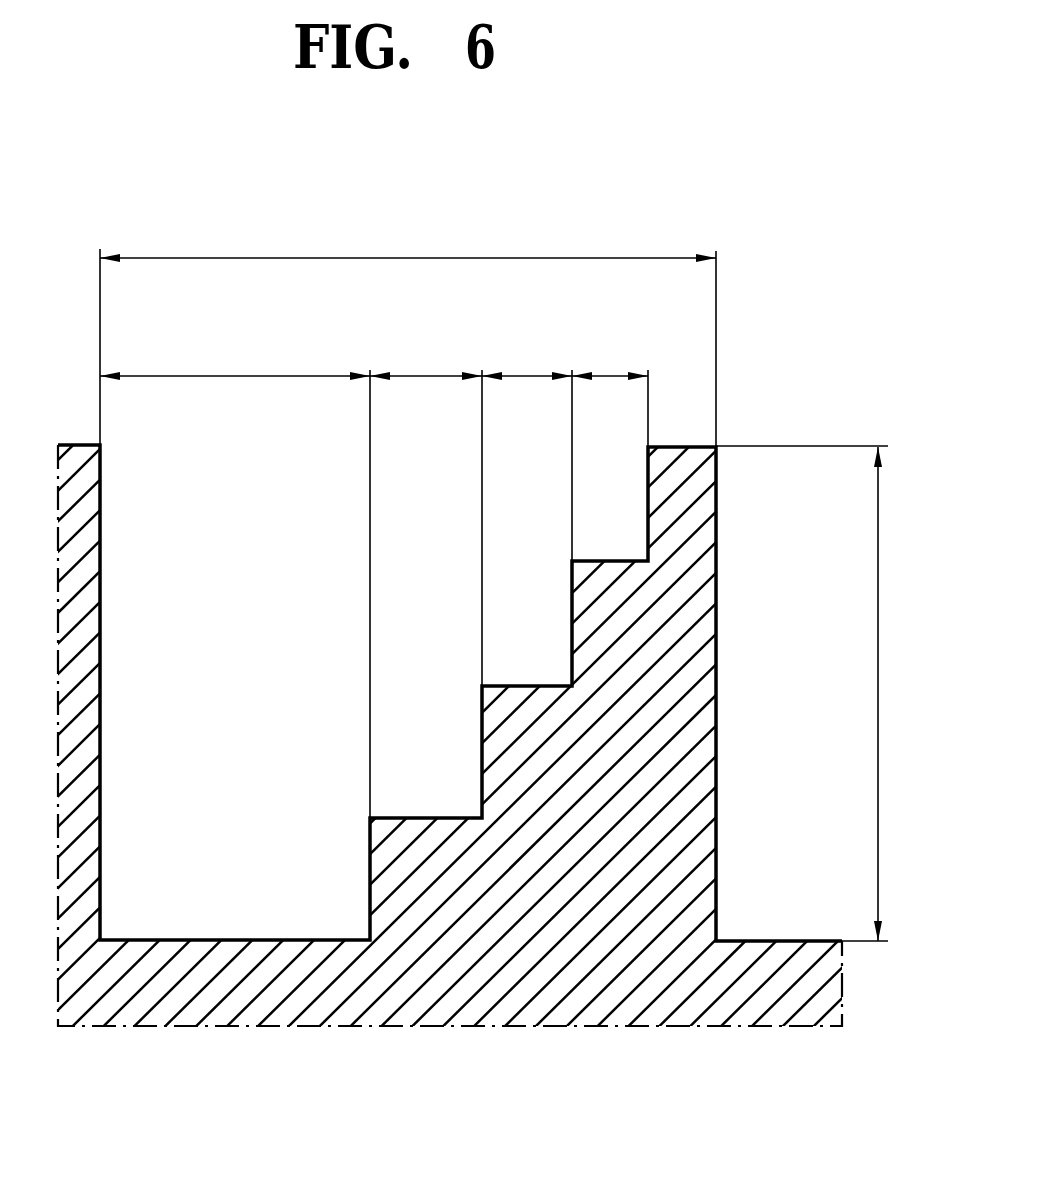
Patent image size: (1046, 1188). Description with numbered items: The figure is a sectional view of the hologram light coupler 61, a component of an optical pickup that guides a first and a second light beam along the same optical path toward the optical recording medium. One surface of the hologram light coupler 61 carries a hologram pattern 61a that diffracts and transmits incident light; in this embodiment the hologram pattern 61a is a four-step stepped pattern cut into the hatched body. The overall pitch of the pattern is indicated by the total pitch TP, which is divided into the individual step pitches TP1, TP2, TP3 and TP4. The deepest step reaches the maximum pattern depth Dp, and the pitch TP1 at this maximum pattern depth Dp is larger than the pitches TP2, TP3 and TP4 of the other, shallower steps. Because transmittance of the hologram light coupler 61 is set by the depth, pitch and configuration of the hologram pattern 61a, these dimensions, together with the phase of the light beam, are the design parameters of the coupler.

The hologram light coupler 61 is at (832, 1007).
The hologram pattern 61a is at (268, 737).
The total pitch of the hologram pattern TP is at (408, 330).
The pitch at the maximum pattern depth TP1 is at (235, 578).
The pitch of the second step TP2 is at (426, 513).
The pitch of the third step TP3 is at (527, 450).
The pitch of the fourth step TP4 is at (610, 393).
The maximum pattern depth Dp is at (822, 693).